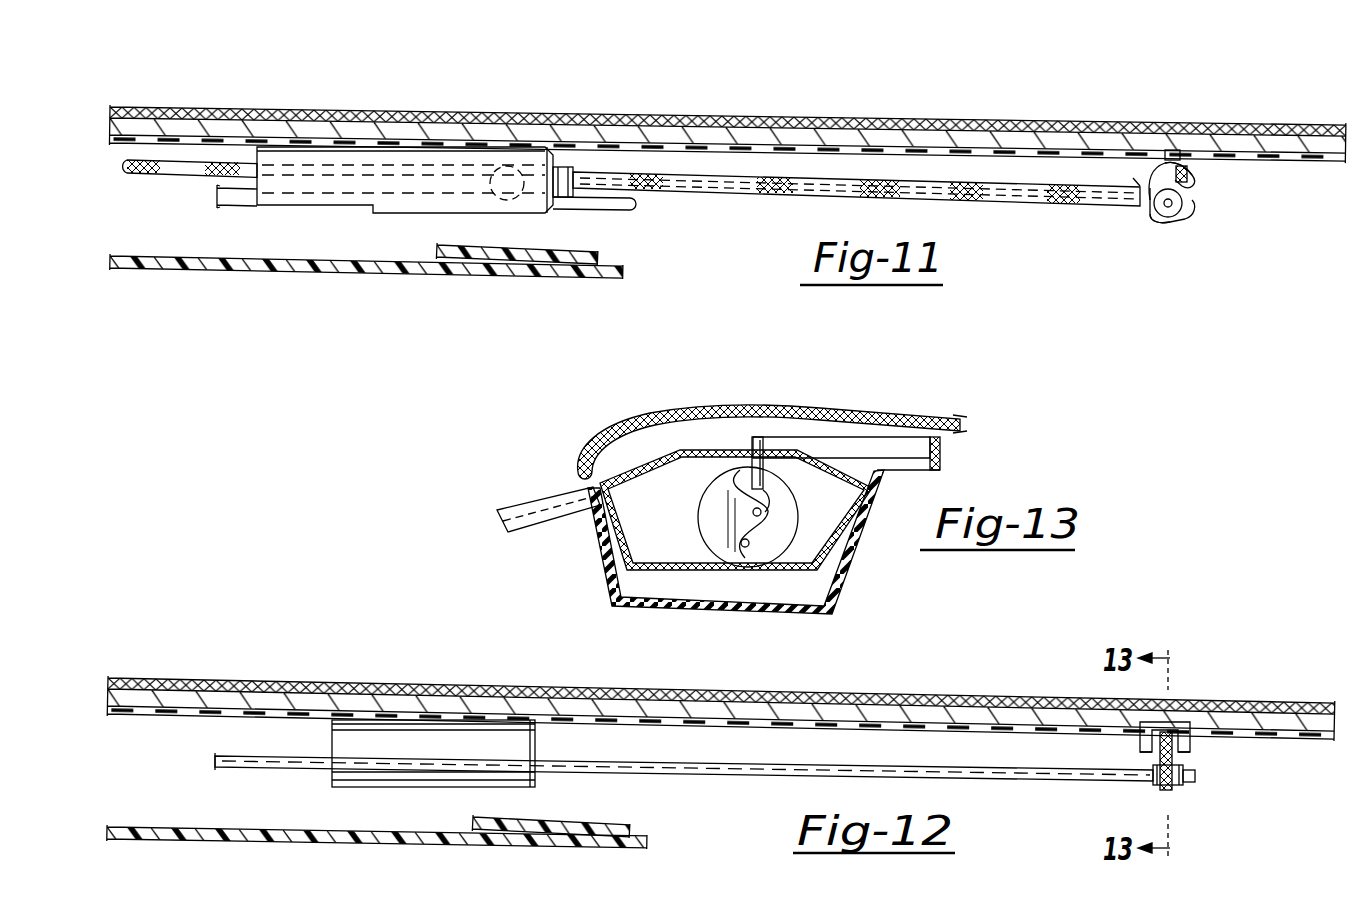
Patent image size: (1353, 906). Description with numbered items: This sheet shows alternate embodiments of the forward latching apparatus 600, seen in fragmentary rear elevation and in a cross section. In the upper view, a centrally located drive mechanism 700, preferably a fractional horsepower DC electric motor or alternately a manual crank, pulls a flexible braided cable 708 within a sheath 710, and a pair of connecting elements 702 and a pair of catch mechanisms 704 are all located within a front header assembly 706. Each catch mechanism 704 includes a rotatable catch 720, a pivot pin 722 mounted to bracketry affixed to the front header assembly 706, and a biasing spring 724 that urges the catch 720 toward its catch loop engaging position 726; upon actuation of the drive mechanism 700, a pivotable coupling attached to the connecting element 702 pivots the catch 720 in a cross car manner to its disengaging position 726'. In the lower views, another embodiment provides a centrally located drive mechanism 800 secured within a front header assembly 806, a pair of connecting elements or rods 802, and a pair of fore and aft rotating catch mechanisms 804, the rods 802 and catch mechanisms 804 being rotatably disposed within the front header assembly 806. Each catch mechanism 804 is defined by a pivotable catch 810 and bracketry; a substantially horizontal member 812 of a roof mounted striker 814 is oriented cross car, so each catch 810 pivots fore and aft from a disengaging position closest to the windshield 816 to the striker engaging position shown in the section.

In FIG. 11, the forward latching apparatus 600 is at (468, 97).
In FIG. 12, the forward latching apparatus 600 is at (421, 672).
In FIG. 13, the forward latching apparatus 600 is at (570, 449).
In FIG. 11, the drive mechanism 700 is at (392, 230).
In FIG. 11, the connecting element 702 is at (838, 150).
In FIG. 11, the catch mechanism 704 is at (1122, 166).
In FIG. 11, the front header assembly 706 is at (590, 142).
In FIG. 11, the flexible braided cable 708 is at (688, 174).
In FIG. 11, the sheath 710 is at (617, 170).
In FIG. 11, the rotatable catch 720 is at (1183, 172).
In FIG. 11, the pivot pin 722 is at (1182, 198).
In FIG. 11, the biasing spring 724 is at (1150, 218).
In FIG. 11, the catch loop engaging position 726 is at (1233, 136).
In FIG. 11, the disengaging position 726' is at (1157, 119).
In FIG. 12, the drive mechanism 800 is at (426, 798).
In FIG. 13, the drive mechanism 800 is at (680, 519).
In FIG. 12, the connecting element or rod 802 is at (800, 767).
In FIG. 13, the connecting element or rod 802 is at (746, 548).
In FIG. 12, the catch mechanism 804 is at (1209, 760).
In FIG. 13, the catch mechanism 804 is at (792, 543).
In FIG. 12, the front header assembly 806 is at (590, 714).
In FIG. 13, the front header assembly 806 is at (697, 450).
In FIG. 12, the pivotable catch 810 is at (1143, 728).
In FIG. 13, the pivotable catch 810 is at (748, 492).
In FIG. 12, the substantially horizontal member 812 is at (1153, 748).
In FIG. 13, the substantially horizontal member 812 is at (765, 510).
In FIG. 12, the roof mounted striker 814 is at (1187, 733).
In FIG. 13, the roof mounted striker 814 is at (770, 503).
In FIG. 13, the windshield 816 is at (522, 510).